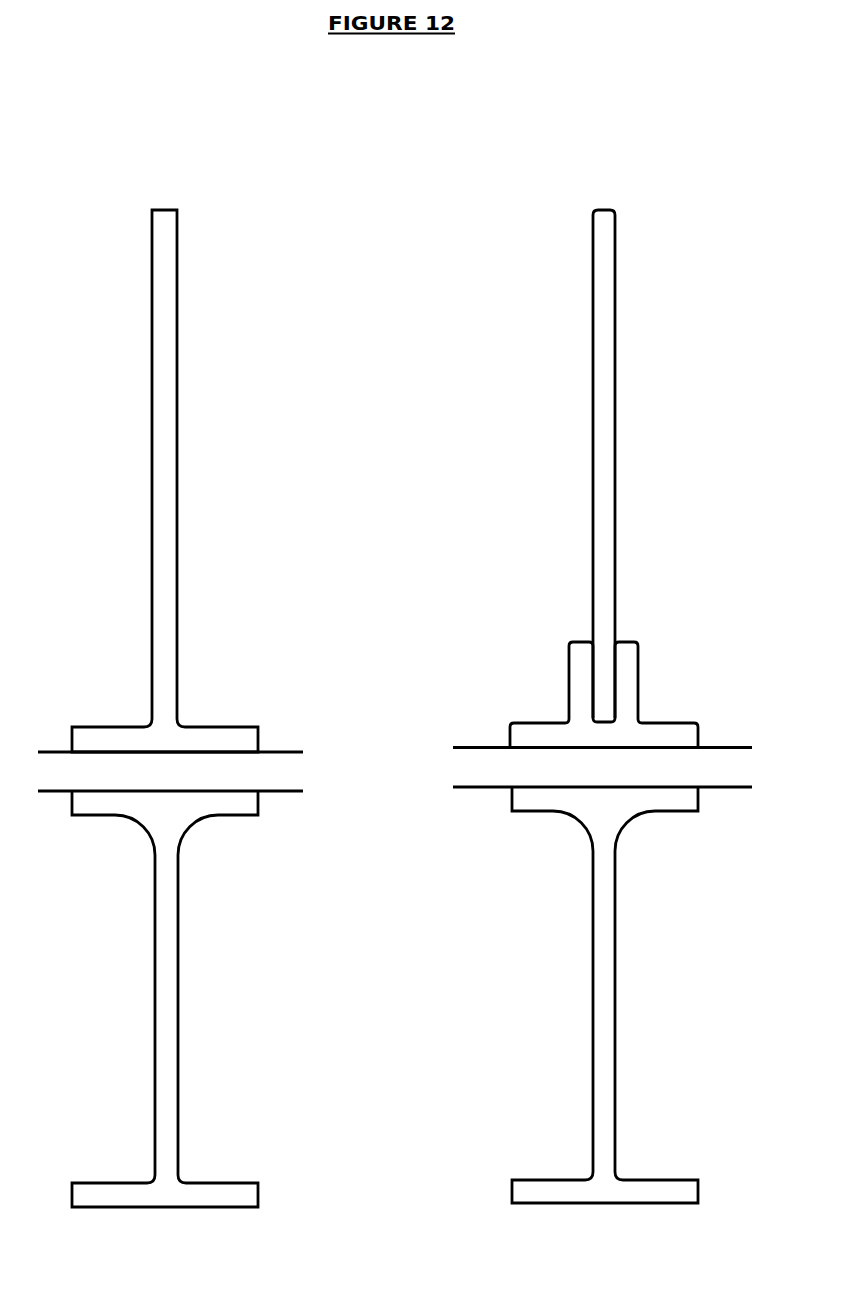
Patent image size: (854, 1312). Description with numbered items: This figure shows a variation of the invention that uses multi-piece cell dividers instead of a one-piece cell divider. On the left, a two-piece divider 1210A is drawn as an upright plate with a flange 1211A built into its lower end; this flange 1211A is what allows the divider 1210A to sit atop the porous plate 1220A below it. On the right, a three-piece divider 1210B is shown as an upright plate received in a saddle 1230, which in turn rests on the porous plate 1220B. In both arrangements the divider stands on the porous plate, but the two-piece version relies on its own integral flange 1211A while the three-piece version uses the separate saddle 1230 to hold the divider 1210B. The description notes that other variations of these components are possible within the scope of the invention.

The two-piece divider 1210A is at (176, 620).
The flange 1211A is at (230, 727).
The porous plate 1220A is at (287, 752).
The three-piece divider 1210B is at (590, 510).
The saddle 1230 is at (568, 720).
The porous plate 1220B is at (493, 747).